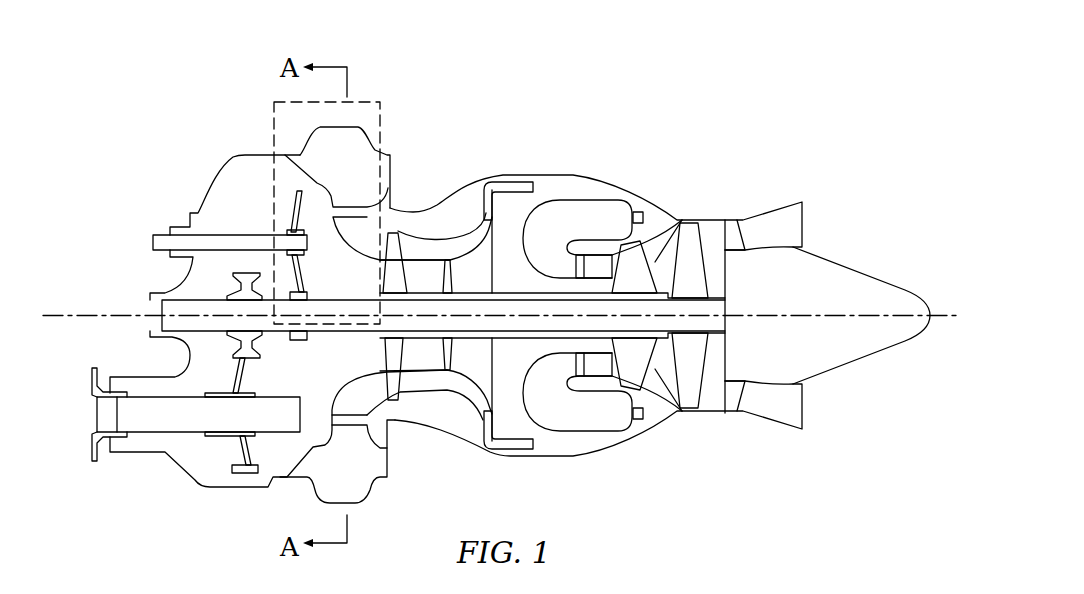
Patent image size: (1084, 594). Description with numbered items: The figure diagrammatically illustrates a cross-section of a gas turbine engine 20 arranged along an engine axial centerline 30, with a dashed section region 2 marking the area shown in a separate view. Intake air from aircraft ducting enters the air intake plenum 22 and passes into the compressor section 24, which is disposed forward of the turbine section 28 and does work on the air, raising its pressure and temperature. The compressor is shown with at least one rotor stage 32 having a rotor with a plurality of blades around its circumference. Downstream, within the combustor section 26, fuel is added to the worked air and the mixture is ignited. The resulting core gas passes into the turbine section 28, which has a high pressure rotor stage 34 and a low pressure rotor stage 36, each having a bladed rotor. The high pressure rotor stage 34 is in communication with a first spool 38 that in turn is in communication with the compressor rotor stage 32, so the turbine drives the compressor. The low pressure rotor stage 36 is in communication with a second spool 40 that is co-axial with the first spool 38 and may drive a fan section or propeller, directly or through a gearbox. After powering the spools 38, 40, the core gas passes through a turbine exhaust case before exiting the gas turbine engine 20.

The section region of gearbox housing 2 is at (274, 117).
The gas turbine engine 20 is at (695, 98).
The air intake plenum 22 is at (362, 106).
The compressor section 24 is at (434, 182).
The combustor section 26 is at (572, 161).
The turbine section 28 is at (729, 201).
The engine axial centerline 30 is at (53, 314).
The rotor stage 32 is at (380, 353).
The high pressure rotor stage 34 is at (640, 400).
The low pressure rotor stage 36 is at (693, 400).
The first spool 38 is at (467, 378).
The second spool 40 is at (528, 382).